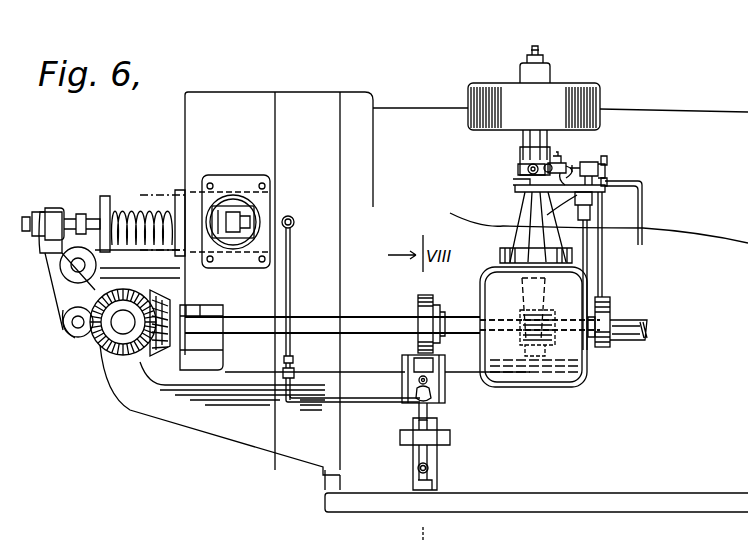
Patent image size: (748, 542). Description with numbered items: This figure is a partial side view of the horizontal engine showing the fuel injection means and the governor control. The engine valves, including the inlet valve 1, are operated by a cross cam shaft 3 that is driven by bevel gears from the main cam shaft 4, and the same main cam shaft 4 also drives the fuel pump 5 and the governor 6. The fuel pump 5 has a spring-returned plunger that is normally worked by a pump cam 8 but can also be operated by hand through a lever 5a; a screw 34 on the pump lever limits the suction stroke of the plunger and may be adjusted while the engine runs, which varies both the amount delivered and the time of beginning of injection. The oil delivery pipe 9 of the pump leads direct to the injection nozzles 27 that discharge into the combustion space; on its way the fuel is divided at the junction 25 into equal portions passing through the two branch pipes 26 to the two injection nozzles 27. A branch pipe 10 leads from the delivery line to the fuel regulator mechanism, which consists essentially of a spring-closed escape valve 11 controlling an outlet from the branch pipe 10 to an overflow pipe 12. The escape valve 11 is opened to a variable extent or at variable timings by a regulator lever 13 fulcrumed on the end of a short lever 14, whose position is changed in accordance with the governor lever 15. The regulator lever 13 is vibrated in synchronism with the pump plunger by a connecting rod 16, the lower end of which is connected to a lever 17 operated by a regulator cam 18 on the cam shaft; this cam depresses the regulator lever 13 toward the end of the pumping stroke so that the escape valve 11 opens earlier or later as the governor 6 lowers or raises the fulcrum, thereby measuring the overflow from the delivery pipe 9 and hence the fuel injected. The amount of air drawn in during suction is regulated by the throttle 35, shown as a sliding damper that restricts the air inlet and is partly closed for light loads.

The inlet valve 1 is at (232, 218).
The cross cam shaft 3 is at (118, 328).
The main cam shaft 4 is at (365, 316).
The fuel pump 5 is at (448, 398).
The lever 5a is at (428, 381).
The governor 6 is at (596, 84).
The pump cam 8 is at (433, 300).
The oil delivery pipe 9 is at (373, 403).
The branch pipe 10 is at (369, 371).
The escape valve 11 is at (593, 162).
The overflow pipe 12 is at (644, 206).
The regulator lever 13 is at (606, 157).
The short lever 14 is at (566, 165).
The governor lever 15 is at (518, 168).
The connecting rod 16 is at (602, 270).
The lever 17 is at (606, 300).
The regulator cam 18 is at (615, 318).
The junction 25 is at (295, 360).
The branch pipes 26 is at (292, 262).
The injection nozzles 27 is at (293, 217).
The screw 34 is at (432, 398).
The throttle 35 is at (190, 200).